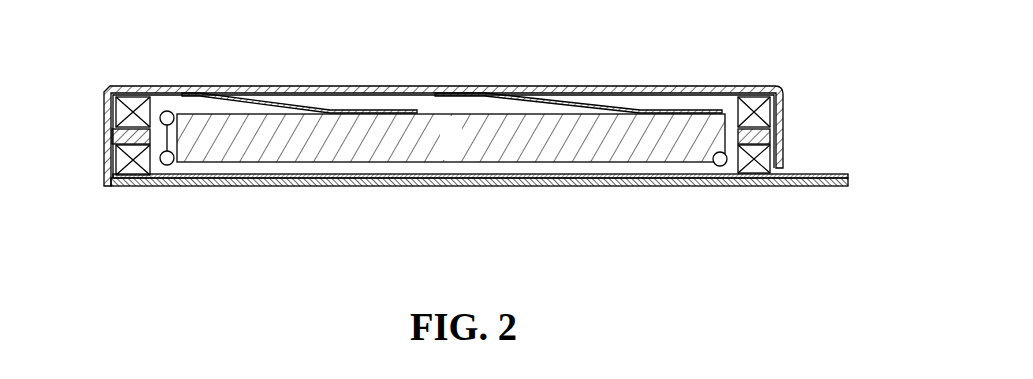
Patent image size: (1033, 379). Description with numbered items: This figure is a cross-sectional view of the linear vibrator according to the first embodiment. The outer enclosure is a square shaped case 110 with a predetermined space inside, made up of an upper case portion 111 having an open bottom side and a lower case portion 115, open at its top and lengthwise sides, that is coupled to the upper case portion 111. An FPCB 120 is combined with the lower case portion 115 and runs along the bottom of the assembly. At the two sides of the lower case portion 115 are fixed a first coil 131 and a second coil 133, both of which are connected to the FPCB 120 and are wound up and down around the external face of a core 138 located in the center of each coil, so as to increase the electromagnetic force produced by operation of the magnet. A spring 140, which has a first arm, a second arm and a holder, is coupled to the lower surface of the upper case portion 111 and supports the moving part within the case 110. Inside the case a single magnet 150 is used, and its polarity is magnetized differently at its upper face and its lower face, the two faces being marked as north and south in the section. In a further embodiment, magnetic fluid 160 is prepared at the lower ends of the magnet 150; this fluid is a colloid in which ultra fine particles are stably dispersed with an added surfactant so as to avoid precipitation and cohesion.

The case 110 is at (847, 105).
The upper case portion 111 is at (783, 115).
The lower case portion 115 is at (773, 177).
The FPCB 120 is at (625, 185).
The first coil 131 is at (749, 99).
The second coil 133 is at (132, 98).
The core 138 is at (110, 140).
The spring 140 is at (308, 97).
The magnet 150 is at (358, 152).
The magnetic fluid 160 is at (722, 168).